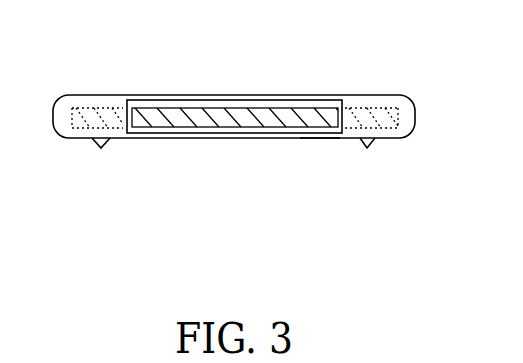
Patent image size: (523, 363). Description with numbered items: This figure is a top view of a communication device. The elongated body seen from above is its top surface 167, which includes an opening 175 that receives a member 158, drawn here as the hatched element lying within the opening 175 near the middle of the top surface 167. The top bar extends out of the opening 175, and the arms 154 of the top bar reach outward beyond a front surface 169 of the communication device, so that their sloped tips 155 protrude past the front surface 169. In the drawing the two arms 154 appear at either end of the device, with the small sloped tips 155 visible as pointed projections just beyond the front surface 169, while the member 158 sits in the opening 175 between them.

The arms 154 is at (84, 155).
The sloped tips 155 is at (108, 145).
The member 158 is at (180, 122).
The top surface 167 is at (415, 105).
The front surface 169 is at (318, 138).
The opening 175 is at (333, 100).